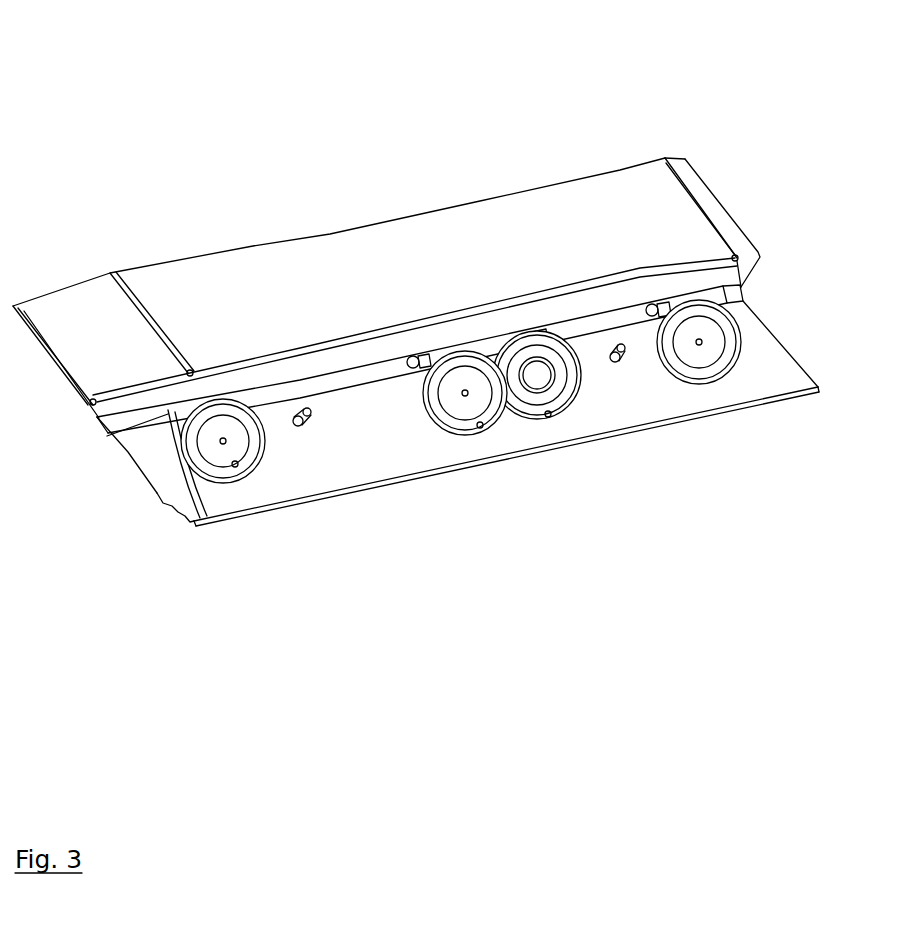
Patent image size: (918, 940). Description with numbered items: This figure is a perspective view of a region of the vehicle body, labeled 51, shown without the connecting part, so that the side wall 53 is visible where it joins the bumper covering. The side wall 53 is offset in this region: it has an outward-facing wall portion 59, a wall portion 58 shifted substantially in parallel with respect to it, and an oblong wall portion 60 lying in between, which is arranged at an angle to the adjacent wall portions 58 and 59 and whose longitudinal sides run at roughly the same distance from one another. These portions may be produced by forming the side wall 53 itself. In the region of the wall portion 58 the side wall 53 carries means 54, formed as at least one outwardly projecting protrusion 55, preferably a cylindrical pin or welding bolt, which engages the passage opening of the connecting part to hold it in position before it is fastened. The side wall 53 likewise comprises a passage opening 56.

The housing 51 is at (386, 220).
The side wall 53 is at (386, 220).
The means 54 is at (418, 364).
The protrusion 55 is at (294, 400).
The passage opening 56 is at (223, 444).
The wall portion 58 is at (167, 477).
The wall portion 59 is at (88, 338).
The wall portion 60 is at (710, 280).